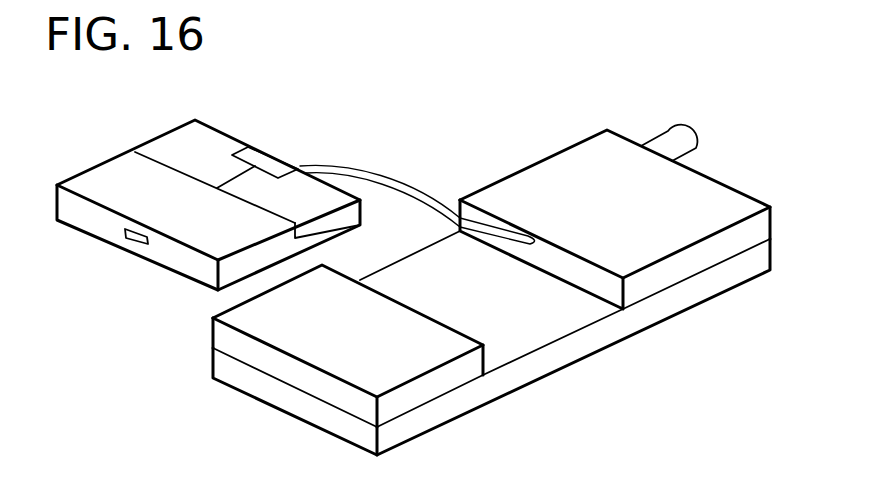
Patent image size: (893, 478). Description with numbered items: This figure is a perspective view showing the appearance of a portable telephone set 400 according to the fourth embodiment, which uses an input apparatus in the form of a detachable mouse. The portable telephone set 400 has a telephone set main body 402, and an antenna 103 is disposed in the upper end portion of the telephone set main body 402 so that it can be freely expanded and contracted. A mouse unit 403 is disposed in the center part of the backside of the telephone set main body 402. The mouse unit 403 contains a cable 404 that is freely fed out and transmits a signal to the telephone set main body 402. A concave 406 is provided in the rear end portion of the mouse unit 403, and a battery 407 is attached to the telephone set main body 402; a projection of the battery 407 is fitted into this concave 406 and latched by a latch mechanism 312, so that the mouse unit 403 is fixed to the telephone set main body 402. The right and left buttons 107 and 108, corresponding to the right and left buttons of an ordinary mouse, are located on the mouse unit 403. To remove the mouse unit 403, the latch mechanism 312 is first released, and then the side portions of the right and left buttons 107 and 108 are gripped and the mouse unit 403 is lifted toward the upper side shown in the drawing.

The portable telephone set 400 is at (652, 342).
The telephone set main body 402 is at (523, 377).
The mouse unit 403 is at (108, 170).
The cable 404 is at (387, 177).
The concave 406 is at (135, 239).
The battery 407 is at (297, 403).
The antenna 103 is at (670, 140).
The right button 107 is at (352, 209).
The left button 108 is at (173, 142).
The latch mechanism 312 is at (263, 160).